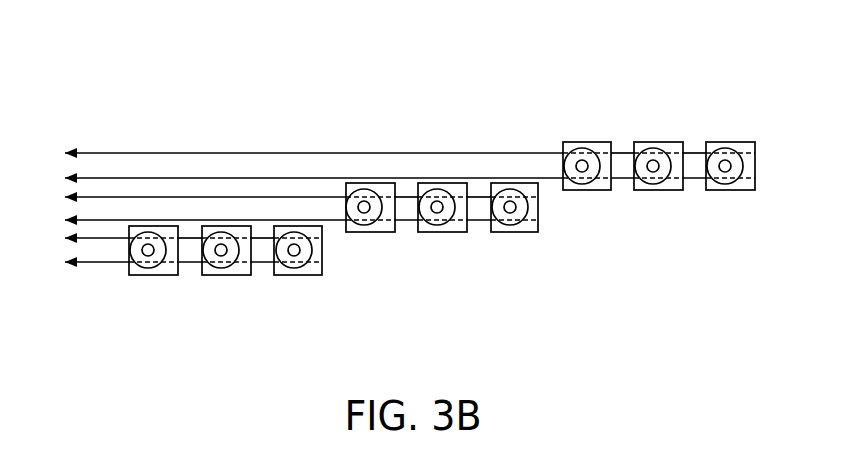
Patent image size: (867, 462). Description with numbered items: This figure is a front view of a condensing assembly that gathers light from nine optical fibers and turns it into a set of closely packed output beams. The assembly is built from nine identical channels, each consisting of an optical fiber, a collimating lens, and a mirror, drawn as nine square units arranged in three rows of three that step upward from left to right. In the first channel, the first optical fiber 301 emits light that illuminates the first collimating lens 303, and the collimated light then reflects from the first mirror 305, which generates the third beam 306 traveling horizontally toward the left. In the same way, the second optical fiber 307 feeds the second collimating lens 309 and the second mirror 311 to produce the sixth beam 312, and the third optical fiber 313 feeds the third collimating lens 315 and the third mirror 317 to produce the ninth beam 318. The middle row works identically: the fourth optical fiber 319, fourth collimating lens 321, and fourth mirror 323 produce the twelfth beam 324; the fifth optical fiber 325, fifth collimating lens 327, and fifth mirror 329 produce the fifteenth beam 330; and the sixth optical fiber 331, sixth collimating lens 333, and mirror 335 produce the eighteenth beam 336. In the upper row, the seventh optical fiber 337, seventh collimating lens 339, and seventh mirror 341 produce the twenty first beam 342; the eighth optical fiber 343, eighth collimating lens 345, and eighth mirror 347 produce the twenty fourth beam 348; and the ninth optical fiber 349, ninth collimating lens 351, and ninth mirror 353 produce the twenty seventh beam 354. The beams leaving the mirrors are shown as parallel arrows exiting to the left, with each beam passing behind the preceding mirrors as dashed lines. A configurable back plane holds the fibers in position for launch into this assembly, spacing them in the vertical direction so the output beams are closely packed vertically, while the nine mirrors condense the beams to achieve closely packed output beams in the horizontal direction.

The first optical fiber 301 is at (147, 256).
The first collimating lens 303 is at (136, 264).
The first mirror 305 is at (157, 226).
The third beam 306 is at (119, 238).
The second optical fiber 307 is at (220, 256).
The second collimating lens 309 is at (209, 264).
The second mirror 311 is at (227, 226).
The sixth beam 312 is at (190, 238).
The third optical fiber 313 is at (293, 256).
The third collimating lens 315 is at (282, 264).
The third mirror 317 is at (299, 226).
The ninth beam 318 is at (263, 238).
The fourth optical fiber 319 is at (363, 213).
The fourth collimating lens 321 is at (357, 223).
The fourth mirror 323 is at (370, 183).
The twelfth beam 324 is at (333, 197).
The fifth optical fiber 325 is at (436, 213).
The fifth collimating lens 327 is at (430, 223).
The fifth mirror 329 is at (443, 183).
The fifteenth beam 330 is at (406, 197).
The sixth optical fiber 331 is at (509, 213).
The sixth collimating lens 333 is at (503, 223).
The sixth mirror 335 is at (515, 183).
The eighteenth beam 336 is at (478, 197).
The seventh optical fiber 337 is at (581, 172).
The seventh collimating lens 339 is at (575, 182).
The seventh mirror 341 is at (587, 142).
The twenty first beam 342 is at (548, 153).
The eighth optical fiber 343 is at (652, 172).
The eighth collimating lens 345 is at (646, 182).
The eighth mirror 347 is at (658, 142).
The twenty fourth beam 348 is at (622, 153).
The ninth optical fiber 349 is at (724, 172).
The ninth collimating lens 351 is at (718, 182).
The ninth mirror 353 is at (728, 142).
The twenty seventh beam 354 is at (695, 153).